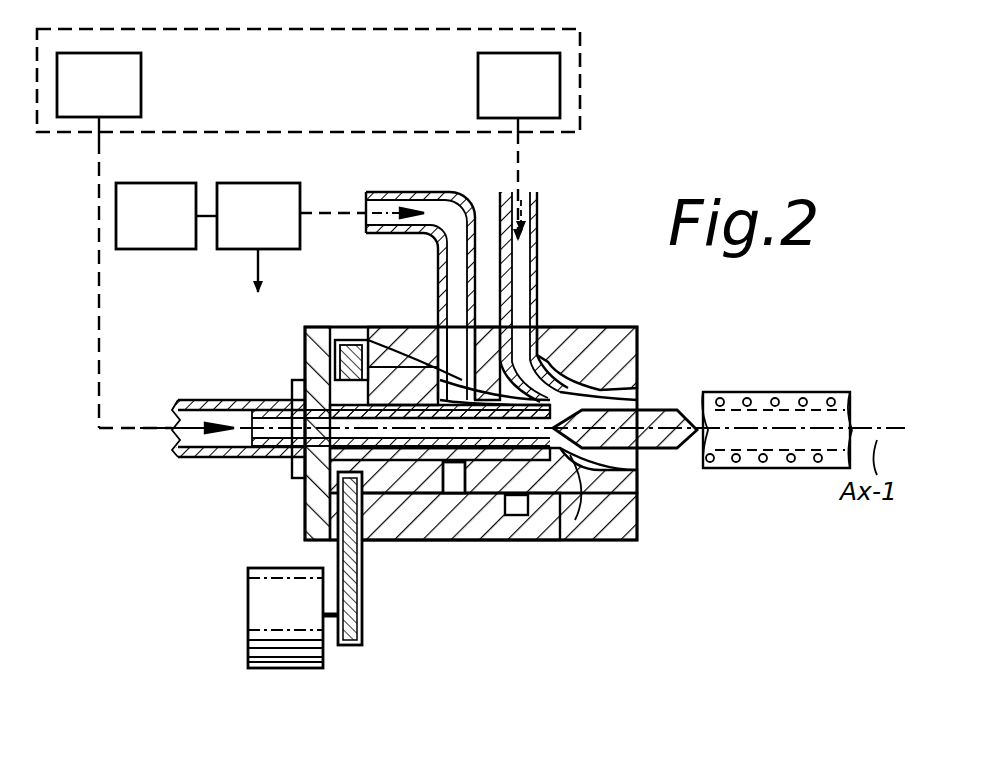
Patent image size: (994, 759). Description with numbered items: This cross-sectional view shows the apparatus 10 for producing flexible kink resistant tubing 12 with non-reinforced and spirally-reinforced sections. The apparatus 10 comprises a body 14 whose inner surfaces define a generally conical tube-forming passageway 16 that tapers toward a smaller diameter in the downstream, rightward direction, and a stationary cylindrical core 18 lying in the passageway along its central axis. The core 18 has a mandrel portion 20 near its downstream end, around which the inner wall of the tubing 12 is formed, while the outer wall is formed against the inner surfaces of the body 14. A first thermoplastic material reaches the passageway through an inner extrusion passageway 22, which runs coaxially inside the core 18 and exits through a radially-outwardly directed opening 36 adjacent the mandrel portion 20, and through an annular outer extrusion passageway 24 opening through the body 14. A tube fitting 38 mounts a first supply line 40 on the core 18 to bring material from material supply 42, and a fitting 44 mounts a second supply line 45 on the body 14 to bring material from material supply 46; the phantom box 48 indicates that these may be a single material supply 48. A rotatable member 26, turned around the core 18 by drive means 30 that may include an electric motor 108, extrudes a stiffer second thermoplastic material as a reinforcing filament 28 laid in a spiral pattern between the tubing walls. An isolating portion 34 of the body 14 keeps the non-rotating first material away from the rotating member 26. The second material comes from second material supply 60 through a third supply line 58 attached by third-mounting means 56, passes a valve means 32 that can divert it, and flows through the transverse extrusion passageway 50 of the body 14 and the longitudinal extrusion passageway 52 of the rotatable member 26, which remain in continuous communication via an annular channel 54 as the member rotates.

The apparatus 10 is at (628, 286).
The tubing 12 is at (797, 390).
The body 14 is at (623, 540).
The tube-forming passageway 16 is at (640, 395).
The core 18 is at (482, 500).
The mandrel portion 20 is at (655, 452).
The inner extrusion passageway 22 is at (270, 410).
The outer extrusion passageway 24 is at (545, 262).
The rotatable member 26 is at (408, 500).
The reinforcing filament 28 is at (765, 468).
The drive means 30 is at (277, 686).
The valve means 32 is at (281, 237).
The isolating portion 34 is at (562, 360).
The radially-outwardly directed opening 36 is at (568, 520).
The tube fitting 38 is at (292, 466).
The first supply line 40 is at (198, 405).
The material supply 42 is at (99, 85).
The fitting 44 is at (540, 340).
The second supply line 45 is at (540, 215).
The material supply 46 is at (519, 85).
The single material supply 48 is at (582, 60).
The extrusion passageway of the body 50 is at (405, 338).
The extrusion passageway of the rotatable member 52 is at (362, 340).
The annular channel 54 is at (445, 495).
The third-mounting means 56 is at (432, 325).
The third supply line 58 is at (410, 192).
The second material supply 60 is at (156, 216).
The electric motor 108 is at (246, 590).